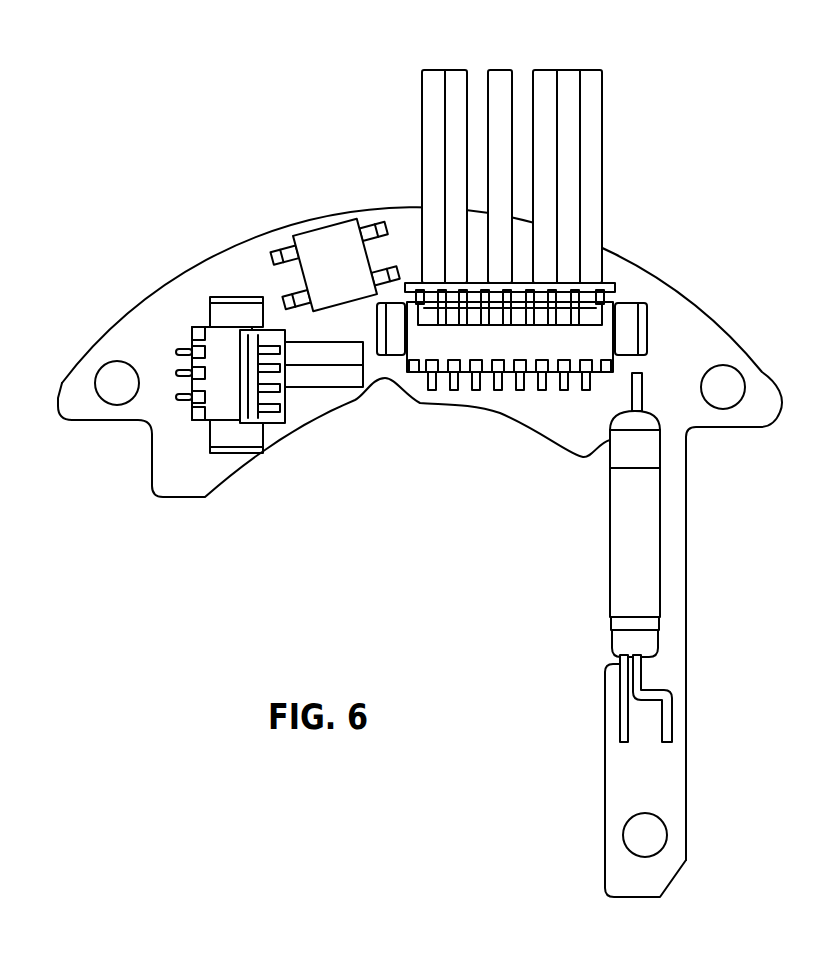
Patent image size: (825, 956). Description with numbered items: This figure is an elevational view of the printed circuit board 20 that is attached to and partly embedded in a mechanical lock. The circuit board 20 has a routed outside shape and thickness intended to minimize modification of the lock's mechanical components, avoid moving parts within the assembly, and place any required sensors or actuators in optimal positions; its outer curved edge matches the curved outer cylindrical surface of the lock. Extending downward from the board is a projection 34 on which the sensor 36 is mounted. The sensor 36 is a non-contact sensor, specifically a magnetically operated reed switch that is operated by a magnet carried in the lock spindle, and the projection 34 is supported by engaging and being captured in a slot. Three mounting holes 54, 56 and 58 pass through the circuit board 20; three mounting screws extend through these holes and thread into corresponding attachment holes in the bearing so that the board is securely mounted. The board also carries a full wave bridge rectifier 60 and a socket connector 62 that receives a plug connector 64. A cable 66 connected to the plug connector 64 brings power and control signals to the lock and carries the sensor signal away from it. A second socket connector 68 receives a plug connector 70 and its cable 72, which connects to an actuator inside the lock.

The printed circuit board 20 is at (690, 325).
The projection 34 is at (668, 772).
The sensor 36 is at (627, 545).
The mounting hole 54 is at (104, 367).
The mounting hole 56 is at (728, 378).
The mounting hole 58 is at (650, 840).
The full wave bridge rectifier 60 is at (323, 235).
The socket connector 62 is at (472, 348).
The plug connector 64 is at (600, 289).
The cable 66 is at (646, 169).
The socket connector 68 is at (218, 348).
The plug connector 70 is at (273, 401).
The cable 72 is at (344, 398).